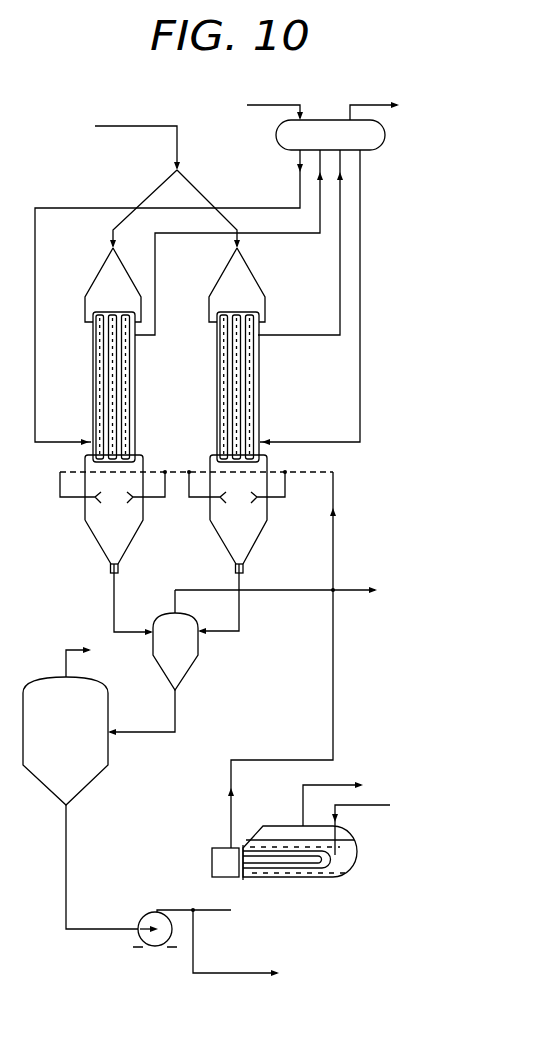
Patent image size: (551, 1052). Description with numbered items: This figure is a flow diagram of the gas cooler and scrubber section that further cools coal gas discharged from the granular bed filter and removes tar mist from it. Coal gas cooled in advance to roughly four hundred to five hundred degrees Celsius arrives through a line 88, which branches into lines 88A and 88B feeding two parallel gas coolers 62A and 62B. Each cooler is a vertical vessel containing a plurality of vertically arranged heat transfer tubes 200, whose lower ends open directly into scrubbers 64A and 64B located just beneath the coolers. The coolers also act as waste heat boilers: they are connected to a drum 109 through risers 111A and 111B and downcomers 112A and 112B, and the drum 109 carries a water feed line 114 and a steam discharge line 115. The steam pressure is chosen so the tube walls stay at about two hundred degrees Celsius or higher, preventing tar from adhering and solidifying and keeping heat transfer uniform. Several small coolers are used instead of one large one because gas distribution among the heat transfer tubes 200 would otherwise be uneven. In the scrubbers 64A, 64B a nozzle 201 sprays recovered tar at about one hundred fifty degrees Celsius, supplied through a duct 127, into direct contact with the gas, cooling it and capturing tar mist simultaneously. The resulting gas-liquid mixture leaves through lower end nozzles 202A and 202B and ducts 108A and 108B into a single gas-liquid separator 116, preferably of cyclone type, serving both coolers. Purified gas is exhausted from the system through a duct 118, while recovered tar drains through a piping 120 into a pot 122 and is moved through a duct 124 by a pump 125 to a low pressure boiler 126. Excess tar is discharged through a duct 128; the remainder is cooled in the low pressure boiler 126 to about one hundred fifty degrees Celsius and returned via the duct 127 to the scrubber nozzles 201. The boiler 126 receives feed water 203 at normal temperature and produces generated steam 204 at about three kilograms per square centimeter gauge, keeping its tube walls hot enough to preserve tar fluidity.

The line 88 is at (103, 126).
The line 88A is at (156, 187).
The line 88B is at (196, 187).
The drum 109 is at (276, 133).
The water feed line 114 is at (256, 104).
The steam discharge line 115 is at (372, 105).
The downcomer 112A is at (35, 272).
The downcomer 112B is at (360, 376).
The riser 111A is at (155, 283).
The riser 111B is at (340, 280).
The gas cooler 62A is at (133, 386).
The gas cooler 62B is at (259, 386).
The heat transfer tubes 200 is at (113, 360).
The scrubber 64A is at (143, 518).
The scrubber 64B is at (268, 518).
The nozzle 201 is at (86, 507).
The lower end nozzle 202A is at (110, 570).
The lower end nozzle 202B is at (236, 570).
The duct 108A is at (114, 612).
The duct 108B is at (233, 632).
The gas-liquid separator 116 is at (192, 658).
The duct 118 is at (285, 592).
The duct 127 is at (333, 488).
The piping 120 is at (178, 706).
The pot 122 is at (108, 704).
The duct 124 is at (115, 931).
The pump 125 is at (143, 915).
The low pressure boiler 126 is at (305, 880).
The duct 128 is at (205, 973).
The feed water 203 is at (363, 806).
The generated steam 204 is at (333, 786).